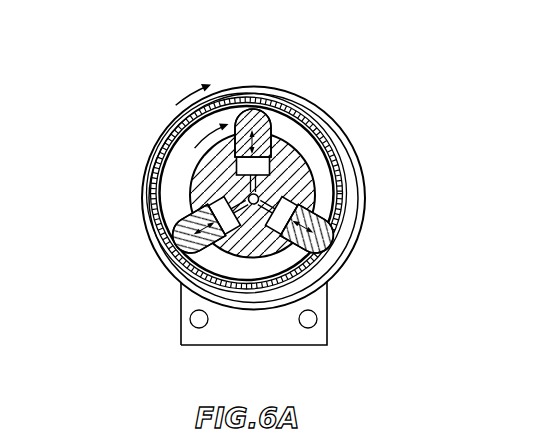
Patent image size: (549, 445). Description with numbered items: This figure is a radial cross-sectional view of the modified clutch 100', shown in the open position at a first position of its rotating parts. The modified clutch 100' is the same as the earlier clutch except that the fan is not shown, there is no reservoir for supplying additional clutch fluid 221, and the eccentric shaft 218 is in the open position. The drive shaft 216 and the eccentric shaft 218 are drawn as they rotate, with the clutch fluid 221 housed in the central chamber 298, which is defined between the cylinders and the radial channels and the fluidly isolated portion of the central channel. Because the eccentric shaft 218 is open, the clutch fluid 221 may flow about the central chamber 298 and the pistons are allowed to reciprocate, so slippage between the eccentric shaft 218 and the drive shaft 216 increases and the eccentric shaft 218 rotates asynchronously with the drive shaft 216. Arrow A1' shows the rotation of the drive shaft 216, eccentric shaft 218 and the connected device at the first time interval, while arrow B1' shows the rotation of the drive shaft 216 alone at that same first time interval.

The modified clutch 100' is at (208, 183).
The drive shaft 216 is at (325, 240).
The eccentric shaft 218 is at (305, 133).
The clutch fluid 221 is at (190, 188).
The central chamber 298 is at (270, 179).
The arrow B1' is at (179, 79).
The arrow A1' is at (172, 123).